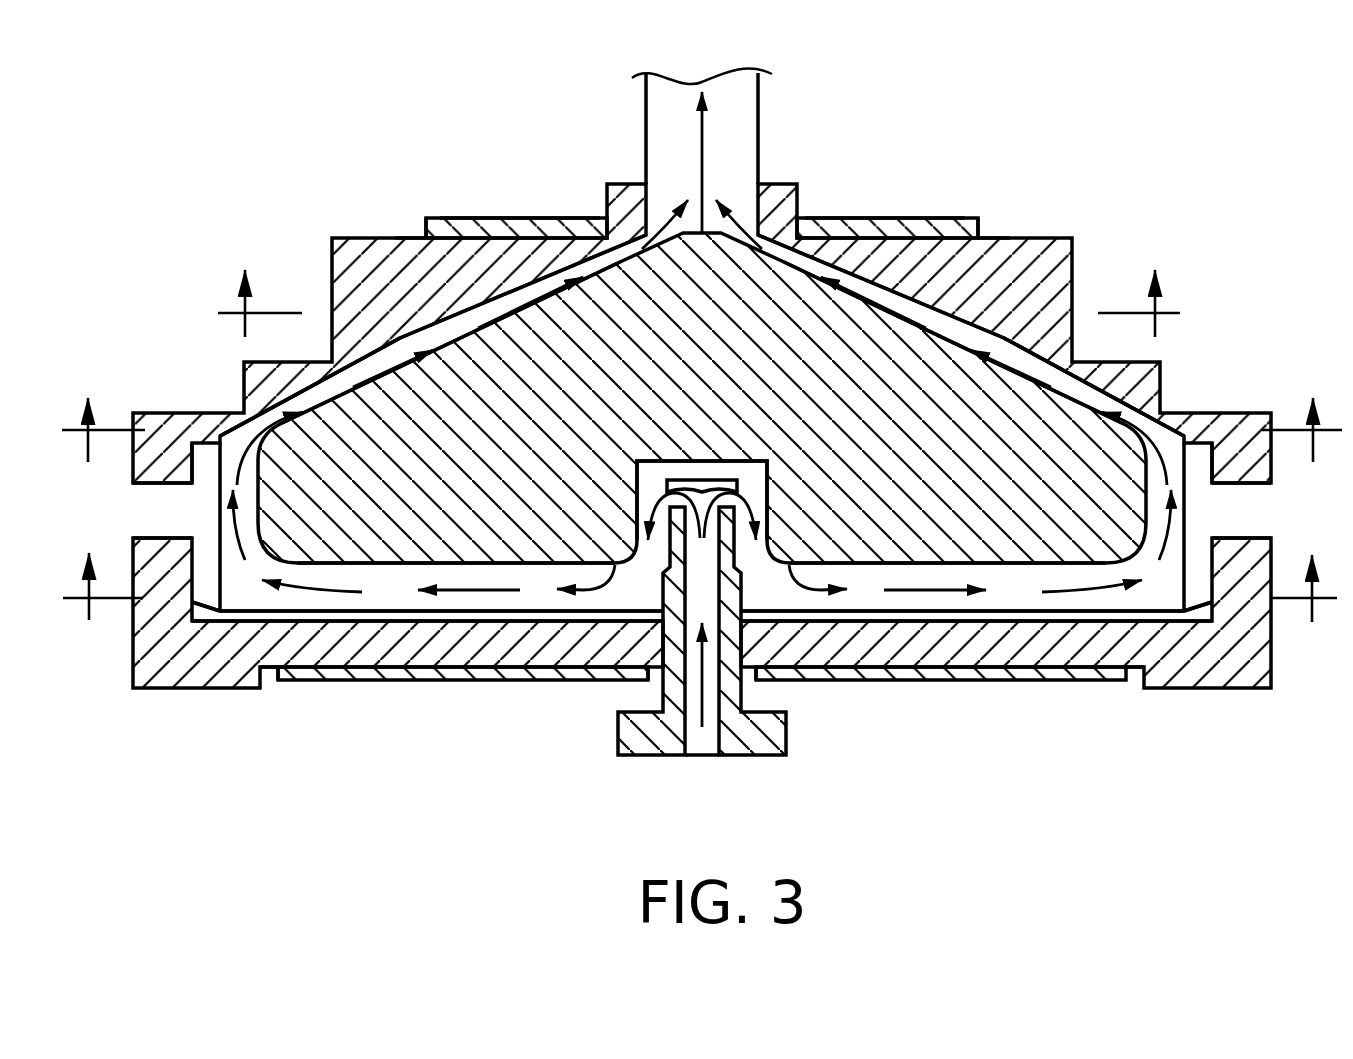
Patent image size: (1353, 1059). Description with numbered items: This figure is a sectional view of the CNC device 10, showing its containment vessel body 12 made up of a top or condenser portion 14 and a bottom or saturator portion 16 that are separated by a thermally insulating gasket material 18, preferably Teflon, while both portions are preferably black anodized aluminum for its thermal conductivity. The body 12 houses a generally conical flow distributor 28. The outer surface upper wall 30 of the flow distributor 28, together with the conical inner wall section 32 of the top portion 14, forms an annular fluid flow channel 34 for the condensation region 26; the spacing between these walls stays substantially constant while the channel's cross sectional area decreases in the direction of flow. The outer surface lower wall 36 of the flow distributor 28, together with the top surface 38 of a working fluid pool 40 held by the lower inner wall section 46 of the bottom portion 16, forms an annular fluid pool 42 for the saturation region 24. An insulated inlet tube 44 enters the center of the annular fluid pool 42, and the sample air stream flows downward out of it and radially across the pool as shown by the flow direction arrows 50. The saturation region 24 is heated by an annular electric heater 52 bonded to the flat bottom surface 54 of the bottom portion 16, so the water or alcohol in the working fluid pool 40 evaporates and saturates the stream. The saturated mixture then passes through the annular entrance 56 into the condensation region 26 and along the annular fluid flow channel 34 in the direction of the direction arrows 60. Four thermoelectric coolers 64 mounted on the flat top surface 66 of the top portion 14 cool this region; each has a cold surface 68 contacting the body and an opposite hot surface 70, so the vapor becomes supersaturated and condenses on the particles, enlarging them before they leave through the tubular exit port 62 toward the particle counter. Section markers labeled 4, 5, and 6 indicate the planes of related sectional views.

The CNC device 10 is at (697, 448).
The containment vessel body 12 is at (697, 448).
The top or condenser portion 14 is at (373, 290).
The bottom or saturator portion 16 is at (140, 645).
The thermally insulating gasket material 18 is at (146, 515).
The saturation region 24 is at (461, 566).
The condensation region 26 is at (518, 316).
The flow distributor 28 is at (683, 378).
The outer surface upper wall 30 is at (480, 340).
The inner wall section 32 is at (390, 356).
The annular fluid flow channel 34 is at (720, 236).
The outer surface lower wall 36 is at (320, 564).
The top surface of working fluid pool 38 is at (398, 611).
The working fluid pool 40 is at (307, 618).
The annular fluid pool 42 is at (370, 578).
The insulated inlet tube 44 is at (650, 744).
The lower inner wall section 46 is at (205, 618).
The flow direction arrows 50 is at (332, 588).
The electric heater 52 is at (540, 682).
The flat bottom surface 54 is at (267, 669).
The annular entrance 56 is at (226, 478).
The direction arrows 60 is at (631, 263).
The tubular exit port 62 is at (760, 120).
The thermoelectric coolers 64 is at (424, 224).
The flat top surface 66 is at (555, 236).
The cold surface of thermoelectric cooler 68 is at (421, 250).
The hot surface of thermoelectric cooler 70 is at (477, 216).
The section line 4- 4 is at (700, 598).
The section line 5- 5 is at (700, 440).
The section line 6- 6 is at (701, 316).